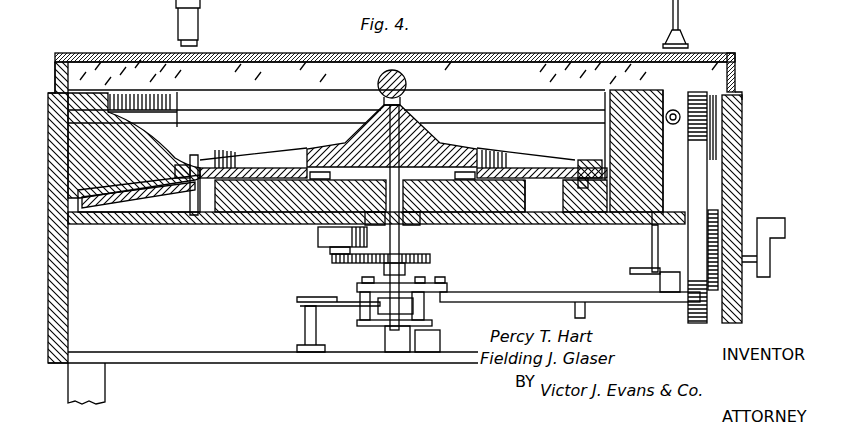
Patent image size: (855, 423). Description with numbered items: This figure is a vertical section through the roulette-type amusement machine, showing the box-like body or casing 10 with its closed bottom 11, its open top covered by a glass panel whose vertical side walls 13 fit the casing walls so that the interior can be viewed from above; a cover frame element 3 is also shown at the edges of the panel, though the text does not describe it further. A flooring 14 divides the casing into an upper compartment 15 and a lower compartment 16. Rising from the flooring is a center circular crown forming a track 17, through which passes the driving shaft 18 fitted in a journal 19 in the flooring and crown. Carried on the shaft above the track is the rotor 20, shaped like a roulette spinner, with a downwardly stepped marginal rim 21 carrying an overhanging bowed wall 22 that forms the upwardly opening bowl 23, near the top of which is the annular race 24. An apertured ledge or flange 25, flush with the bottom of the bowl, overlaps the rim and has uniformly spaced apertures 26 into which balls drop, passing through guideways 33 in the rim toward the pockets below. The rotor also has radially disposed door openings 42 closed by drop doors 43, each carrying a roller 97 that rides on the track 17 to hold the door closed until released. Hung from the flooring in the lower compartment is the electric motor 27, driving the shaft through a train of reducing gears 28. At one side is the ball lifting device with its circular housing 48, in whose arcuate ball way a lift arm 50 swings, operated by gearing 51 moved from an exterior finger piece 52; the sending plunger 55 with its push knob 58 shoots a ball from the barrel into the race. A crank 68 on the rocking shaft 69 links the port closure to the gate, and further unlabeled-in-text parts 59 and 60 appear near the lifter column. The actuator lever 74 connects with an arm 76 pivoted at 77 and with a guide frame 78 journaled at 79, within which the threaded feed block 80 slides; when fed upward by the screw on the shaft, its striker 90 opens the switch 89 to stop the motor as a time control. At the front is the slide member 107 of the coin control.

The ring frame of cover 3 is at (56, 74).
The body or casing 10 is at (87, 347).
The closed bottom 11 is at (178, 363).
The side walls of cover 13 is at (737, 62).
The flooring 14 is at (537, 222).
The upper compartment 15 is at (575, 128).
The lower compartment 16 is at (637, 230).
The crown or track 17 is at (492, 222).
The driving shaft 18 is at (405, 250).
The journal 19 is at (415, 218).
The rotor 20 is at (412, 140).
The marginal rim 21 is at (184, 226).
The bowed wall 22 is at (95, 149).
The bowl 23 is at (132, 138).
The annular race 24 is at (78, 128).
The apertured ledge or flange 25 is at (605, 212).
The apertures 26 is at (188, 172).
The electric motor 27 is at (300, 250).
The train of reducing gears 28 is at (345, 264).
The guideways 33 is at (150, 222).
The door openings 42 is at (240, 160).
The drop doors 43 is at (270, 178).
The circular housing 48 is at (700, 134).
The lift arm 50 is at (742, 298).
The gearing 51 is at (712, 215).
The finger piece 52 is at (781, 218).
The sending plunger 55 is at (676, 109).
The push knob 58 is at (670, 32).
The rod 59 is at (680, 8).
The shaft housing 60 is at (688, 311).
The crank 68 is at (672, 268).
The rocking shaft 69 is at (638, 274).
The actuator lever 74 is at (712, 109).
The arm 76 is at (608, 292).
The pivot 77 is at (577, 292).
The guide frame 78 is at (448, 289).
The journal of guide frame 79 is at (425, 277).
The threaded feed block 80 is at (413, 306).
The switch 89 is at (296, 306).
The striker 90 is at (346, 320).
The roller 97 is at (465, 167).
The slide member 107 is at (195, 22).